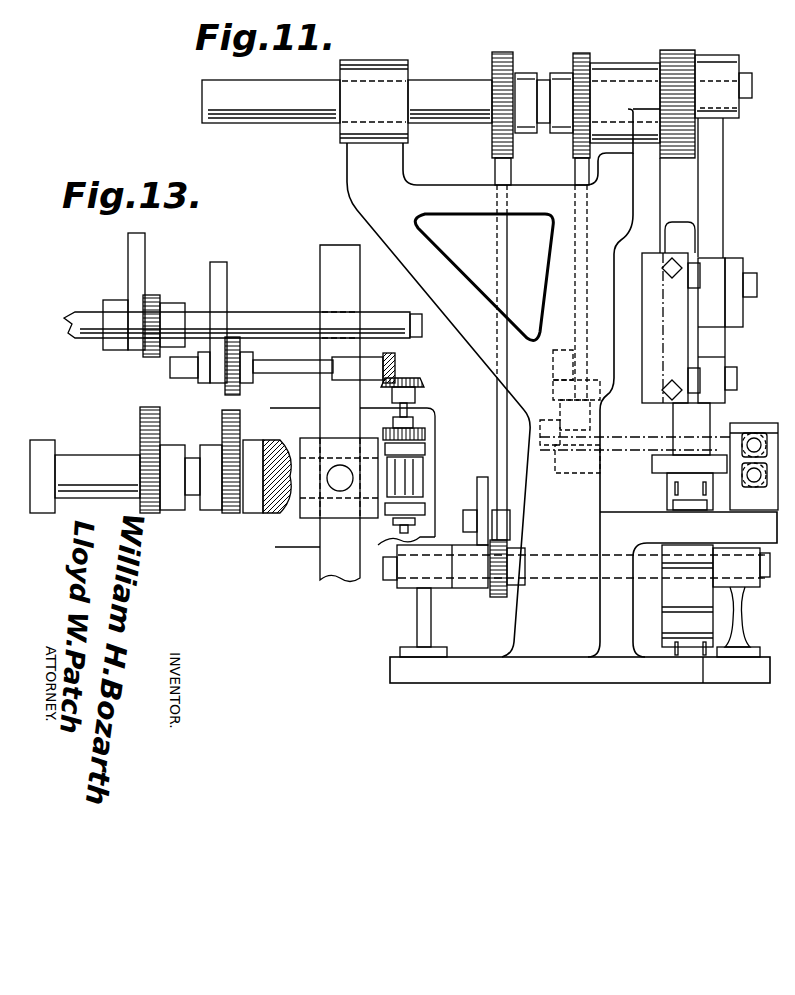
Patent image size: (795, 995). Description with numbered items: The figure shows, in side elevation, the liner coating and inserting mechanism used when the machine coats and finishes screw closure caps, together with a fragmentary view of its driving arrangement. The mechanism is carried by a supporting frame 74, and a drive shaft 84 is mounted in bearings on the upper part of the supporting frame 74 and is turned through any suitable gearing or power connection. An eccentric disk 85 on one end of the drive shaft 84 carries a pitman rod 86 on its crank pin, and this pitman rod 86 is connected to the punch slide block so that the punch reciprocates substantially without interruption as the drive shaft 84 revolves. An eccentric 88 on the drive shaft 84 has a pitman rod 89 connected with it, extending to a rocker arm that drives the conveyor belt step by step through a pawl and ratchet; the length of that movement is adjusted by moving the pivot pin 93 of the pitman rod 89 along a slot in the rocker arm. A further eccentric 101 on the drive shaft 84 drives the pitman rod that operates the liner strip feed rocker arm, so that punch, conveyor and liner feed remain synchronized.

The drive shaft 84 is at (449, 90).
The eccentric 88 is at (516, 63).
The eccentric 101 is at (586, 58).
The eccentric disk 85 is at (680, 70).
The pitman rod 86 is at (723, 204).
The pitman rod 89 is at (500, 263).
The pivot pin 93 is at (463, 518).
The supporting frame 74 is at (562, 627).